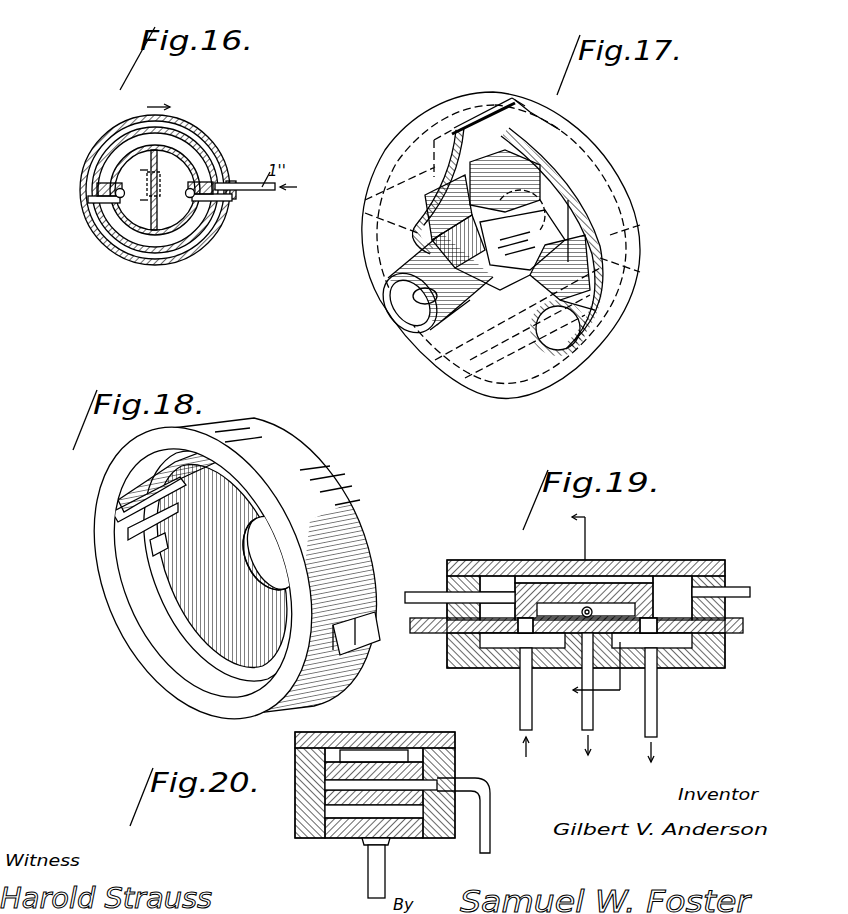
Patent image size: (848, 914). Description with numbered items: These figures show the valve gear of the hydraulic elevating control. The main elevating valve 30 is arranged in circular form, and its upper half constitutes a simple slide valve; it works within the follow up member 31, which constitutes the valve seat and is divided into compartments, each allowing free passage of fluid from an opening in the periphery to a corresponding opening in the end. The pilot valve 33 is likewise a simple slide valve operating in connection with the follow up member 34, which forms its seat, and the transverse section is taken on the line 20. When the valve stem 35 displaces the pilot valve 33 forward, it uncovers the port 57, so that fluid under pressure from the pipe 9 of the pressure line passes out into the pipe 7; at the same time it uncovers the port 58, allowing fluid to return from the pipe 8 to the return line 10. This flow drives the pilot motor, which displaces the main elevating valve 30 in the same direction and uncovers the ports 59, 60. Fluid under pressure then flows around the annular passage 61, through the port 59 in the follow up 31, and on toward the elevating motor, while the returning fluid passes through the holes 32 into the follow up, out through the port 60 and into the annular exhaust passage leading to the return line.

In FIG. 16, the main elevating valve 30 is at (118, 136).
In FIG. 18, the main elevating valve 30 is at (320, 470).
In FIG. 16, the follow up member 31 is at (146, 232).
In FIG. 17, the follow up member 31 is at (566, 133).
In FIG. 16, the holes 32 is at (163, 186).
In FIG. 17, the holes 32 is at (420, 302).
In FIG. 17, the pilot valve 33 is at (605, 221).
In FIG. 19, the pilot valve 33 is at (655, 603).
In FIG. 20, the pilot valve 33 is at (331, 757).
In FIG. 19, the follow up member 34 is at (415, 633).
In FIG. 20, the follow up member 34 is at (331, 800).
In FIG. 19, the valve stem 35 is at (422, 596).
In FIG. 19, the port 57 is at (652, 630).
In FIG. 19, the port 58 is at (524, 630).
In FIG. 16, the port 59 is at (118, 197).
In FIG. 17, the port 59 is at (503, 102).
In FIG. 16, the port 60 is at (191, 178).
In FIG. 17, the port 60 is at (474, 400).
In FIG. 16, the annular passage 61 is at (185, 247).
In FIG. 19, the pipe 7 is at (658, 708).
In FIG. 19, the pipe 8 is at (531, 692).
In FIG. 20, the pipe 8 is at (380, 878).
In FIG. 19, the pipe 9 is at (733, 593).
In FIG. 19, the return line 10 is at (588, 608).
In FIG. 20, the return line 10 is at (488, 832).
In FIG. 19, the section line 20 is at (597, 607).